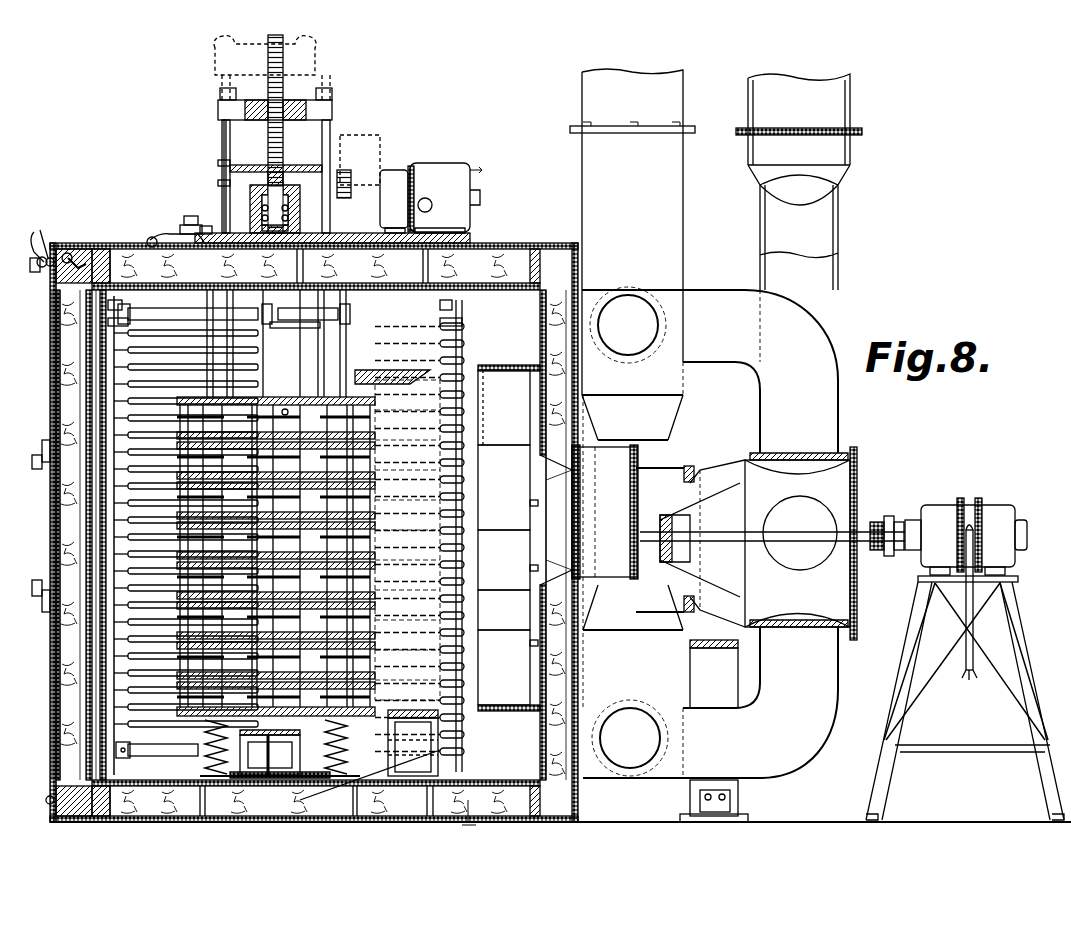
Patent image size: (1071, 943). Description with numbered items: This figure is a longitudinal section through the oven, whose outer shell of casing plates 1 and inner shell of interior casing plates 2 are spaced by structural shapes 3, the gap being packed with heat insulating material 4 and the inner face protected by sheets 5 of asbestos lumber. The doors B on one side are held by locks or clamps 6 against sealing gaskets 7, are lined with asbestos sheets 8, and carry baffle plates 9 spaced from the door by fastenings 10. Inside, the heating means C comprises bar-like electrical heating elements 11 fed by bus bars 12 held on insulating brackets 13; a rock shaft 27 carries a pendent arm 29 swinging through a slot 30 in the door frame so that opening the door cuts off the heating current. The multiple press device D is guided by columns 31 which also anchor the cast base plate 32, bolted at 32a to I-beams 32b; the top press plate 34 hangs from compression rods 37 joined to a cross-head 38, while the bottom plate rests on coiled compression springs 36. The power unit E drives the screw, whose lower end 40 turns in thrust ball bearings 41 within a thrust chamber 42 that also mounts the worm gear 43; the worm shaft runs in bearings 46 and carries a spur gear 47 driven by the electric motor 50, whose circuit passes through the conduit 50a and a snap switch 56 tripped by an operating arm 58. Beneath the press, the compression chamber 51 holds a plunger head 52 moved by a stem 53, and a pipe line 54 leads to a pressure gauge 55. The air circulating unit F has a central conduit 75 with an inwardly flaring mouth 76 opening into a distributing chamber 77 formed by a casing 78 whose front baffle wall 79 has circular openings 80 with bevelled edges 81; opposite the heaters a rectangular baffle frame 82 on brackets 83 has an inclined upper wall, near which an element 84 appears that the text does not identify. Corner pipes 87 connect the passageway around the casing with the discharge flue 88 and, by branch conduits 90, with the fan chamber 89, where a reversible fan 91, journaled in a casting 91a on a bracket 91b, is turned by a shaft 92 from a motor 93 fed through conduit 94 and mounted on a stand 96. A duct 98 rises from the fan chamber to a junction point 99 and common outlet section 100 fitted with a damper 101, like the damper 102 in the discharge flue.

The casing plates 1 is at (575, 822).
The interior casing plates 2 is at (500, 275).
The structural shapes 3 is at (470, 243).
The heat insulating material 4 is at (112, 262).
The sheets of asbestos lumber 5 is at (128, 270).
The locks or clamps 6 is at (40, 585).
The sealing gaskets 7 is at (84, 258).
The sheets of asbestos lumber 8 is at (90, 378).
The baffle plates 9 is at (44, 444).
The fastenings 10 is at (98, 522).
The electrical heating elements 11 is at (372, 345).
The bus bars 12 is at (115, 345).
The insulating brackets 13 is at (112, 326).
The rock shaft 27 is at (44, 255).
The pendent arm 29 is at (72, 254).
The slot 30 is at (70, 290).
The guide posts or columns 31 is at (232, 302).
The base plate 32 is at (462, 233).
The bolts 32a is at (395, 790).
The I-beams 32b is at (414, 172).
The top press plate 34 is at (283, 397).
The coiled compression springs 36 is at (190, 748).
The compression rods 37 is at (222, 112).
The cross-head 38 is at (300, 104).
The lower end of screw 40 is at (258, 190).
The thrust ball bearings 41 is at (258, 212).
The thrust chamber 42 is at (250, 200).
The worm gear 43 is at (312, 168).
The ball and thrust bearings 46 is at (357, 182).
The spur gear 47 is at (290, 190).
The electric motor 50 is at (430, 165).
The conduit 50a is at (163, 232).
The compression chamber 51 is at (250, 756).
The plunger head 52 is at (276, 747).
The stem 53 is at (252, 742).
The pipe line 54 is at (230, 770).
The pressure gauge 55 is at (300, 708).
The snap switch 56 is at (192, 220).
The operating arm 58 is at (222, 160).
The central conduit 75 is at (605, 512).
The inwardly flaring mouth portion 76 is at (556, 480).
The distributing chamber 77 is at (480, 440).
The casing 78 is at (488, 368).
The front baffle wall 79 is at (484, 670).
The circular openings 80 is at (482, 545).
The bevelled edges 81 is at (482, 500).
The baffle frame 82 is at (407, 537).
The brackets 83 is at (413, 747).
The wedge 84 is at (404, 381).
The corner pipes 87 is at (592, 298).
The discharge flue 88 is at (632, 423).
The fan chamber 89 is at (801, 543).
The branch conduits 90 is at (710, 534).
The reversible fan 91 is at (700, 494).
The casting 91a is at (686, 590).
The bracket 91b is at (714, 731).
The shaft 92 is at (722, 535).
The motor 93 is at (940, 505).
The conduit 94 is at (962, 594).
The stand 96 is at (900, 702).
The duct 98 is at (822, 275).
The common junction point 99 is at (826, 206).
The common outlet section 100 is at (852, 160).
The damper or cut-off 101 is at (826, 130).
The damper or cut-off 102 is at (638, 126).
The doors B is at (42, 533).
The electrical heating means C is at (190, 310).
The multiple press device D is at (276, 524).
The exterior power unit E is at (345, 145).
The air circulating unit F is at (780, 514).